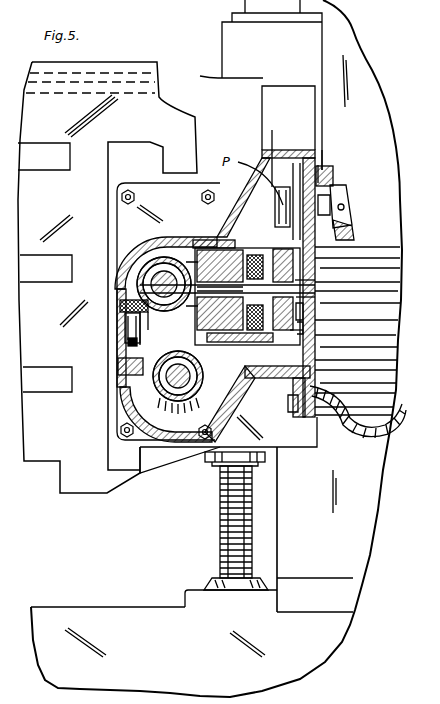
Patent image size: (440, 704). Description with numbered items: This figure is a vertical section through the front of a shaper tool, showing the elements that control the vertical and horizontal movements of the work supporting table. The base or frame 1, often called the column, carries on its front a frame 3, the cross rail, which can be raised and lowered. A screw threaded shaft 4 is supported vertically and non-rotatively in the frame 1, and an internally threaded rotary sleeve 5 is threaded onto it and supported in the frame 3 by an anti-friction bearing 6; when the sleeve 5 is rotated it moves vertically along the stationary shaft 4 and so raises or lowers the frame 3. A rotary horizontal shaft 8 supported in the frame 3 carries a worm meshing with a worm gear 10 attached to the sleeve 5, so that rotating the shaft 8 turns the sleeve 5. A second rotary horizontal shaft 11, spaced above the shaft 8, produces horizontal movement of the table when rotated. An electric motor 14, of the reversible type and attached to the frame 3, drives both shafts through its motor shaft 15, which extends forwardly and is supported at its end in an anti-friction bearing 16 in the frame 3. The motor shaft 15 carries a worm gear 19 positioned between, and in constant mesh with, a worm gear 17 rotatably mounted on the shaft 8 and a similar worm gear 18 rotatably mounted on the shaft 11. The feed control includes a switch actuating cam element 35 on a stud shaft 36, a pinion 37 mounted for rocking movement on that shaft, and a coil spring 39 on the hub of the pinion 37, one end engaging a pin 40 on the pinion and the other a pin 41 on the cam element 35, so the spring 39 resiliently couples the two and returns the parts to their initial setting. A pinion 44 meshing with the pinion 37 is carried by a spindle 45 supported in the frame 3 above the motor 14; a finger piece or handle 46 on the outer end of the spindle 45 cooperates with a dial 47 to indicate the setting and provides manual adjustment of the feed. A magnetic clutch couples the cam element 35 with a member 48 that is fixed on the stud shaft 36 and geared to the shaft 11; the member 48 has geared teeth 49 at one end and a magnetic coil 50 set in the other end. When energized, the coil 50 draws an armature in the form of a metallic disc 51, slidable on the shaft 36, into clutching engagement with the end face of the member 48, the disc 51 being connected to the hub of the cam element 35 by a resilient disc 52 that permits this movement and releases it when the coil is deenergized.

The base or frame 1 is at (343, 45).
The frame 3 is at (218, 78).
The screw threaded shaft 4 is at (222, 520).
The internally threaded rotary sleeve 5 is at (265, 456).
The anti-friction bearing 6 is at (200, 455).
The rotary horizontal shaft 8 is at (185, 375).
The worm gear 10 is at (286, 115).
The rotary horizontal shaft 11 is at (165, 262).
The electric motor 14 is at (382, 265).
The motor shaft 15 is at (311, 365).
The anti-friction bearing 16 is at (123, 340).
The worm gear 17 is at (157, 377).
The worm gear 18 is at (142, 278).
The worm gear 19 is at (137, 316).
The switch actuating cam element 35 is at (316, 268).
The stud shaft 36 is at (318, 290).
The pinion 37 is at (318, 298).
The coil spring 39 is at (318, 305).
The pin 40 is at (318, 327).
The pin 41 is at (318, 318).
The pinion 44 is at (334, 178).
The spindle 45 is at (347, 198).
The finger piece or handle 46 is at (352, 226).
The dial 47 is at (322, 165).
The member 48 is at (215, 258).
The geared teeth 49 is at (175, 268).
The magnetic coil 50 is at (248, 242).
The metallic disc 51 is at (234, 404).
The resilient disc 52 is at (285, 368).